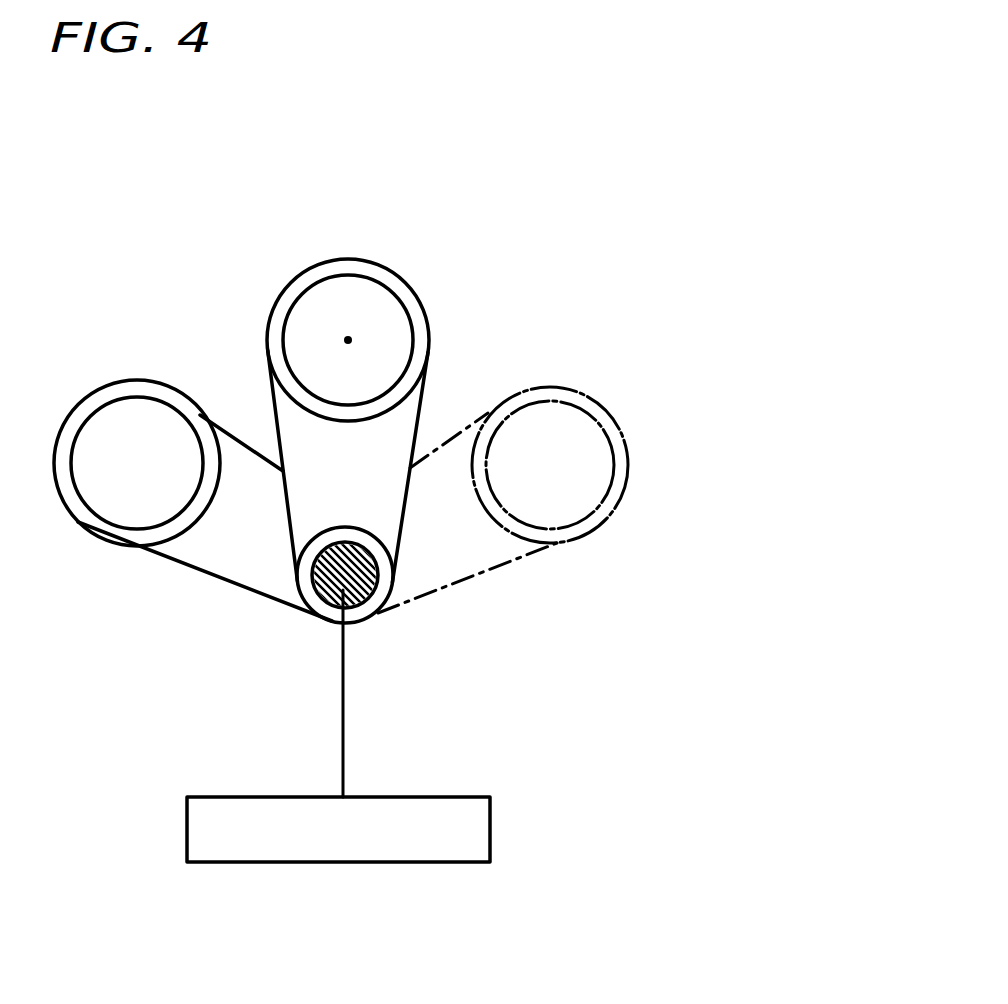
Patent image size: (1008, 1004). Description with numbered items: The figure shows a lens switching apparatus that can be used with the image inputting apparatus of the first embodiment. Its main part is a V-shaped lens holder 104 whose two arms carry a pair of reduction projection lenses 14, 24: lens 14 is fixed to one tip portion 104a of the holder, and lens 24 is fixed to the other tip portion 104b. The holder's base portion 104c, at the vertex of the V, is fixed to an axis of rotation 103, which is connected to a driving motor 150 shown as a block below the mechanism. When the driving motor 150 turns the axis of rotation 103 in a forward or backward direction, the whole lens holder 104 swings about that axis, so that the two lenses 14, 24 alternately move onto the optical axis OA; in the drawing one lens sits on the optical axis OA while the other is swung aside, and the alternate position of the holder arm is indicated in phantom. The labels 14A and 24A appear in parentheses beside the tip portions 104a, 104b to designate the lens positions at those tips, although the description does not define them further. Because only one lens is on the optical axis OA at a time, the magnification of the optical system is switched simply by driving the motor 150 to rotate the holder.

The reduction projection lens 14 is at (351, 293).
The roller shaft portion 14A is at (417, 353).
The reduction projection lens 24 is at (143, 418).
The second roller shaft portion 24A is at (90, 530).
The optical axis OA is at (350, 339).
The axis of rotation 103 is at (380, 605).
The lens holder 104 is at (255, 573).
The tip portion 104a is at (633, 470).
The tip portion 104b is at (105, 578).
The base portion 104c is at (355, 620).
The driving motor 150 is at (492, 830).